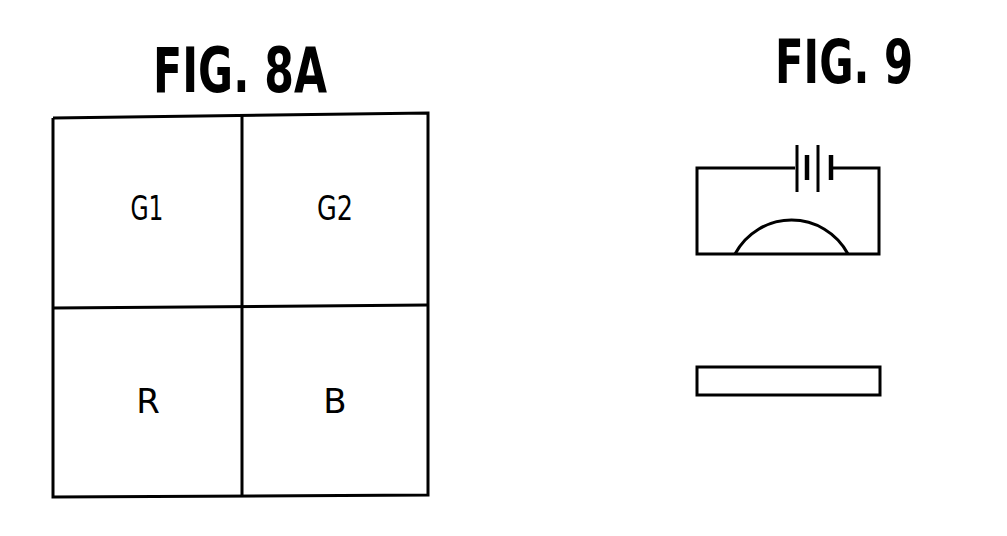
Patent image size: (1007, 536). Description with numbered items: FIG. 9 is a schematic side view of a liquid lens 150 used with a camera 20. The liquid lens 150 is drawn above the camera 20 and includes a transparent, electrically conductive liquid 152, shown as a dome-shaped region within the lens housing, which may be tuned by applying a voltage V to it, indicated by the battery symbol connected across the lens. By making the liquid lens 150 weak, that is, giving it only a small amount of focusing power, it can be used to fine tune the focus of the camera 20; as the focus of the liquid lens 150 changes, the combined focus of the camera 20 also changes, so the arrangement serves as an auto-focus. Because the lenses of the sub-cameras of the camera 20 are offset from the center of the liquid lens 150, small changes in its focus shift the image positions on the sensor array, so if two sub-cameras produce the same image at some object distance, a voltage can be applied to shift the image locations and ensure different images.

The liquid lens 150 is at (895, 158).
The transparent, electrically conductive liquid 152 is at (787, 242).
The camera 20 is at (863, 367).